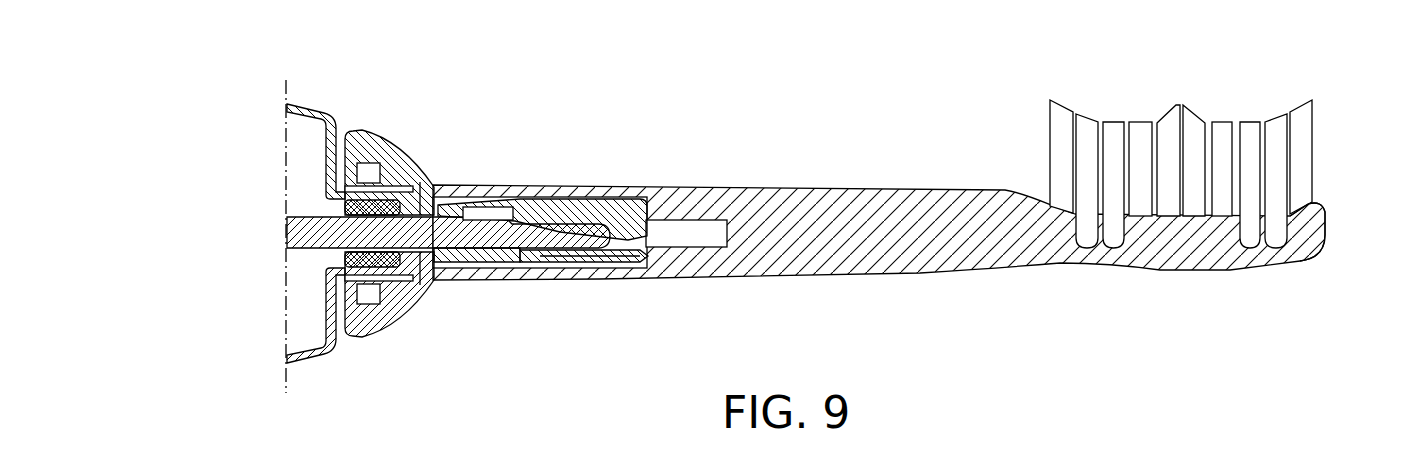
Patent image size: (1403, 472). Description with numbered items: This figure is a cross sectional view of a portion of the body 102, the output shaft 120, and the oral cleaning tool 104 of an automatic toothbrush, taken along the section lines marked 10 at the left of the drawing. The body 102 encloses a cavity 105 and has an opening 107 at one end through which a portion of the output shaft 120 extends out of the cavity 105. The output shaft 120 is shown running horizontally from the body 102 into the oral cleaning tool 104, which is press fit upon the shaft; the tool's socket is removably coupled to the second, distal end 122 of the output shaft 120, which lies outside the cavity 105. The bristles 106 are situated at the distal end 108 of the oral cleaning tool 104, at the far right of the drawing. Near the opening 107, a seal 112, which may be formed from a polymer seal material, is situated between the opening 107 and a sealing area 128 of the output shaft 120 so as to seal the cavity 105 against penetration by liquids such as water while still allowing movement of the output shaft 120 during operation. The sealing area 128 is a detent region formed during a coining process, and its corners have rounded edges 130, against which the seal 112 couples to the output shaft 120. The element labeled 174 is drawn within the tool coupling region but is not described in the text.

The section line 10 is at (377, 123).
The body 102 is at (308, 104).
The oral cleaning tool 104 is at (843, 183).
The cavity 105 is at (300, 318).
The bristles 106 is at (1036, 112).
The opening 107 is at (443, 272).
The distal end 108 is at (1325, 232).
The seal 112 is at (372, 210).
The output shaft 120 is at (288, 226).
The second (distal) end 122 is at (622, 202).
The sealing area 128 is at (330, 206).
The rounded edges 130 is at (372, 210).
The retaining clip 174 is at (563, 262).